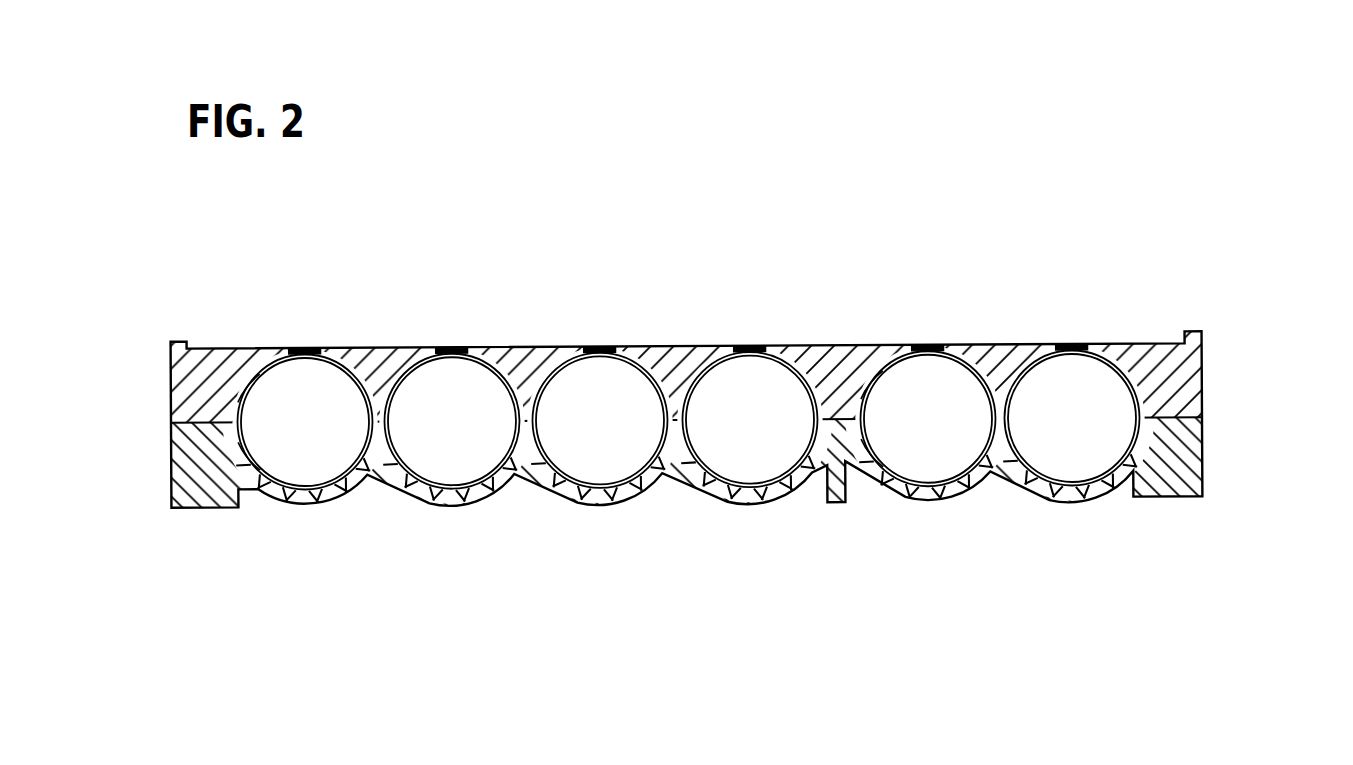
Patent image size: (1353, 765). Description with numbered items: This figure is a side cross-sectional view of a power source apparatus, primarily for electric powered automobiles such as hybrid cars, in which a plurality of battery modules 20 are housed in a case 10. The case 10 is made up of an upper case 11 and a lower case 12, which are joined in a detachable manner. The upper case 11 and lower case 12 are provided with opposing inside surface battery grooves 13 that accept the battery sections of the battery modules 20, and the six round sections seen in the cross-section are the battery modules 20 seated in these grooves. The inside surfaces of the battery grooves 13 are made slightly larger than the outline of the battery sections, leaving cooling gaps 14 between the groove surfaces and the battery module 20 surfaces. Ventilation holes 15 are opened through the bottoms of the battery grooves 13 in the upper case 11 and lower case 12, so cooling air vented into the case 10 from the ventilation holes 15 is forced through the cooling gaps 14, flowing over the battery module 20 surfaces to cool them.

The case 10 is at (1272, 470).
The upper case 11 is at (1183, 381).
The lower case 12 is at (1183, 458).
The battery grooves 13 is at (245, 378).
The cooling gaps 14 is at (975, 480).
The ventilation holes 15 is at (307, 349).
The battery modules 20 is at (307, 470).